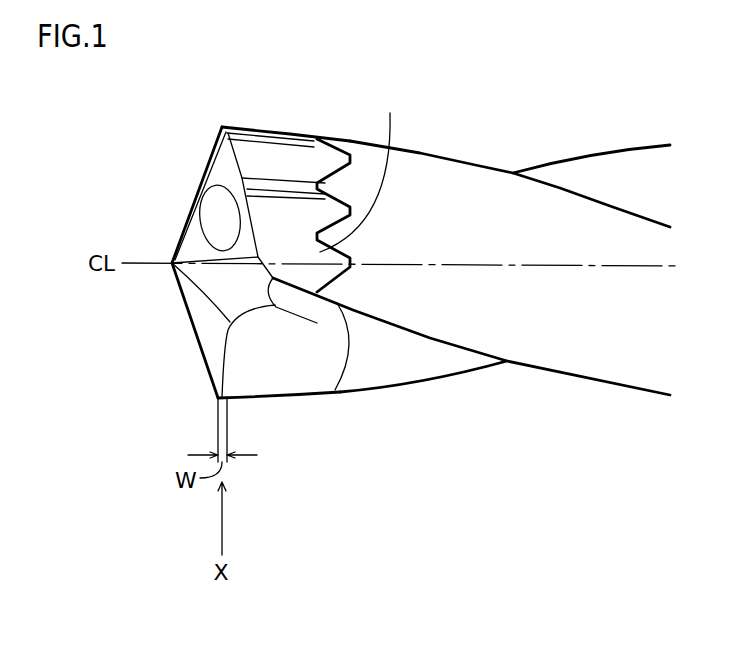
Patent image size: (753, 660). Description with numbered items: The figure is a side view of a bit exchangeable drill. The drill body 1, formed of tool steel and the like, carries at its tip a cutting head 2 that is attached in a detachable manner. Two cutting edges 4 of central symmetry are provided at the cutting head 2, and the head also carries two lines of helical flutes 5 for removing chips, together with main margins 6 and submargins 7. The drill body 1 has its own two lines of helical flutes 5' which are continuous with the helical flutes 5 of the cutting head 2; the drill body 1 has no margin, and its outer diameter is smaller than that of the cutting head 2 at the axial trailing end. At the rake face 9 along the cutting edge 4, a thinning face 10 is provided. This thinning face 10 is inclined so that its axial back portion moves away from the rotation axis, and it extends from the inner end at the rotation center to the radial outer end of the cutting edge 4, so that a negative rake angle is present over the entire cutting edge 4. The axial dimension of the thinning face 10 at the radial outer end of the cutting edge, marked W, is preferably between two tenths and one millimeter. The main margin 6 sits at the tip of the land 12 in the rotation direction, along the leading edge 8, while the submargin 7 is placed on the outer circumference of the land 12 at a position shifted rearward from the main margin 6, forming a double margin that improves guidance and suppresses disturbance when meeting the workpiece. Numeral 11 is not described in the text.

The drill body 1 is at (616, 143).
The cutting head 2 is at (281, 118).
The cutting edge 4 is at (209, 373).
The helical flute 5 is at (227, 364).
The helical flute 5' is at (505, 268).
The main margin 6 is at (232, 127).
The submargin 7 is at (291, 184).
The leading edge 8 is at (310, 398).
The rake face 9 is at (170, 297).
The thinning face 10 is at (202, 322).
The tip edge 11 is at (213, 150).
The land 12 is at (361, 171).